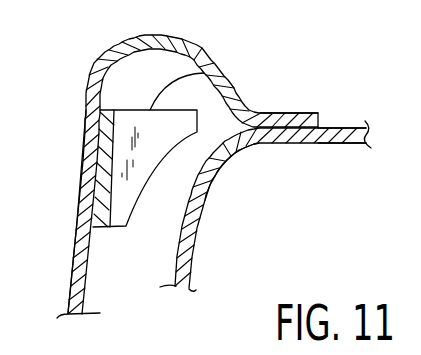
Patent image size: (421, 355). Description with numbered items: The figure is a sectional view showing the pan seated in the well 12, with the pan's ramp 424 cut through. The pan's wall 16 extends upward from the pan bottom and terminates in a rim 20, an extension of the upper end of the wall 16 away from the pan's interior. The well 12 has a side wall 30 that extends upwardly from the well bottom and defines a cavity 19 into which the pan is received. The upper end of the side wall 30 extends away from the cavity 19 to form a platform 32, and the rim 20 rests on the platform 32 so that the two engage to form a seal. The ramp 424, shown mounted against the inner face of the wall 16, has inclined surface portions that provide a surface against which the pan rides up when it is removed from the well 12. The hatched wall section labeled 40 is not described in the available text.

The housing wall 40 is at (110, 57).
The wall 16 is at (78, 212).
The cavity 19 is at (87, 298).
The ramp 424 is at (170, 87).
The rim 20 is at (295, 113).
The side wall 30 is at (192, 250).
The well 12 is at (222, 165).
The platform 32 is at (317, 145).